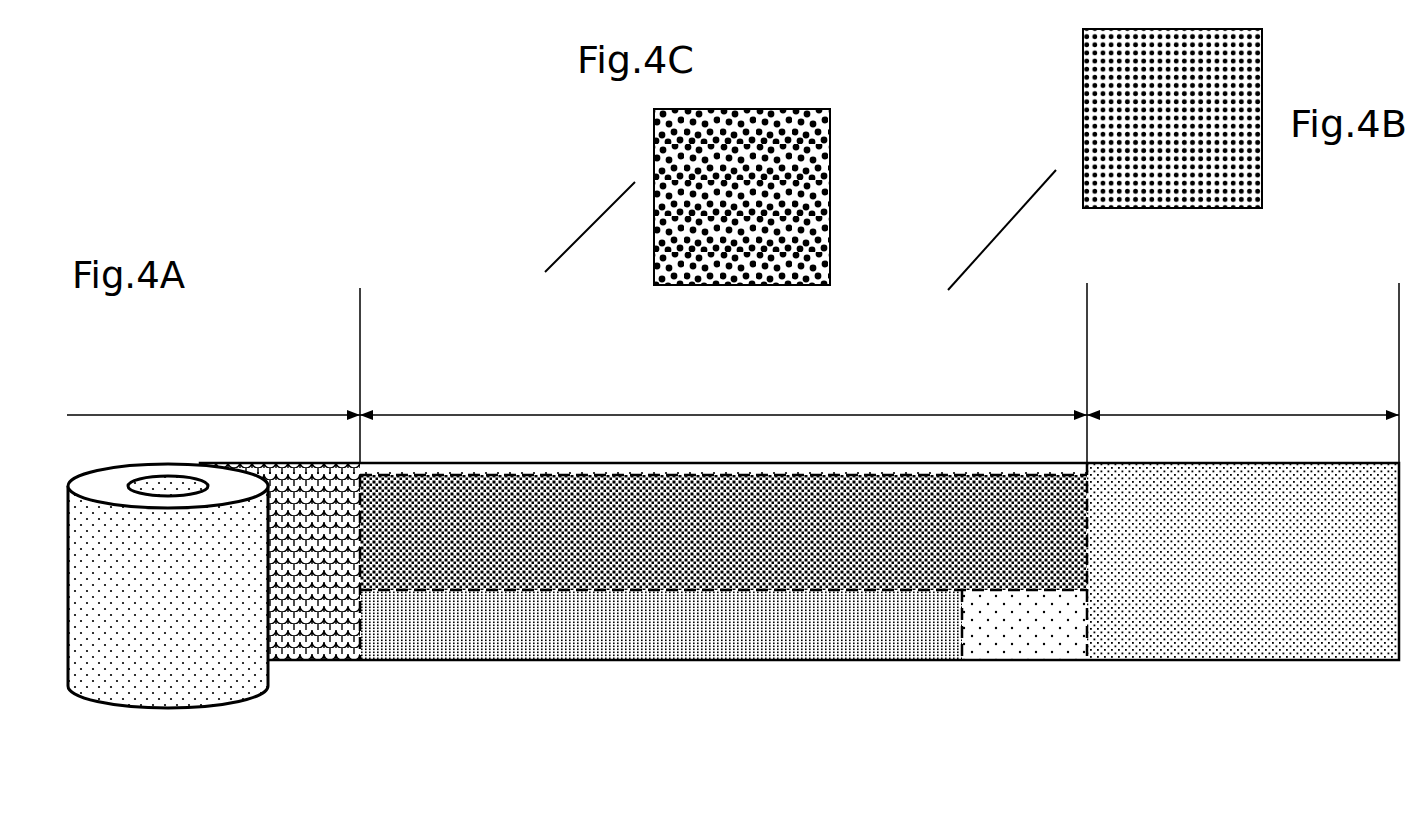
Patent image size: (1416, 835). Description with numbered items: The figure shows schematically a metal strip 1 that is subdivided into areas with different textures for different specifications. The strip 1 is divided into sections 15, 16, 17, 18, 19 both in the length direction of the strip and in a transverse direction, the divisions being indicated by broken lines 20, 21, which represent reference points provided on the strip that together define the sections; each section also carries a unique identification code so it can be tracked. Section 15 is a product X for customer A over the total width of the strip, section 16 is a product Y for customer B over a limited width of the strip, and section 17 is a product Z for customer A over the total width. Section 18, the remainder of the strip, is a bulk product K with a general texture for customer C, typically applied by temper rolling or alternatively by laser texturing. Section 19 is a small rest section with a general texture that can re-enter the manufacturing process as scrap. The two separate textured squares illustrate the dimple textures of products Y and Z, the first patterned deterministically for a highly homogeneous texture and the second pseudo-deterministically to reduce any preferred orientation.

The strip 1 is at (220, 672).
The section 15 is at (1253, 543).
The section 16 is at (898, 628).
The section 17 is at (435, 535).
The section 18 is at (320, 508).
The rest section 19 is at (1023, 627).
The broken line 20 is at (1087, 623).
The broken line 21 is at (795, 592).